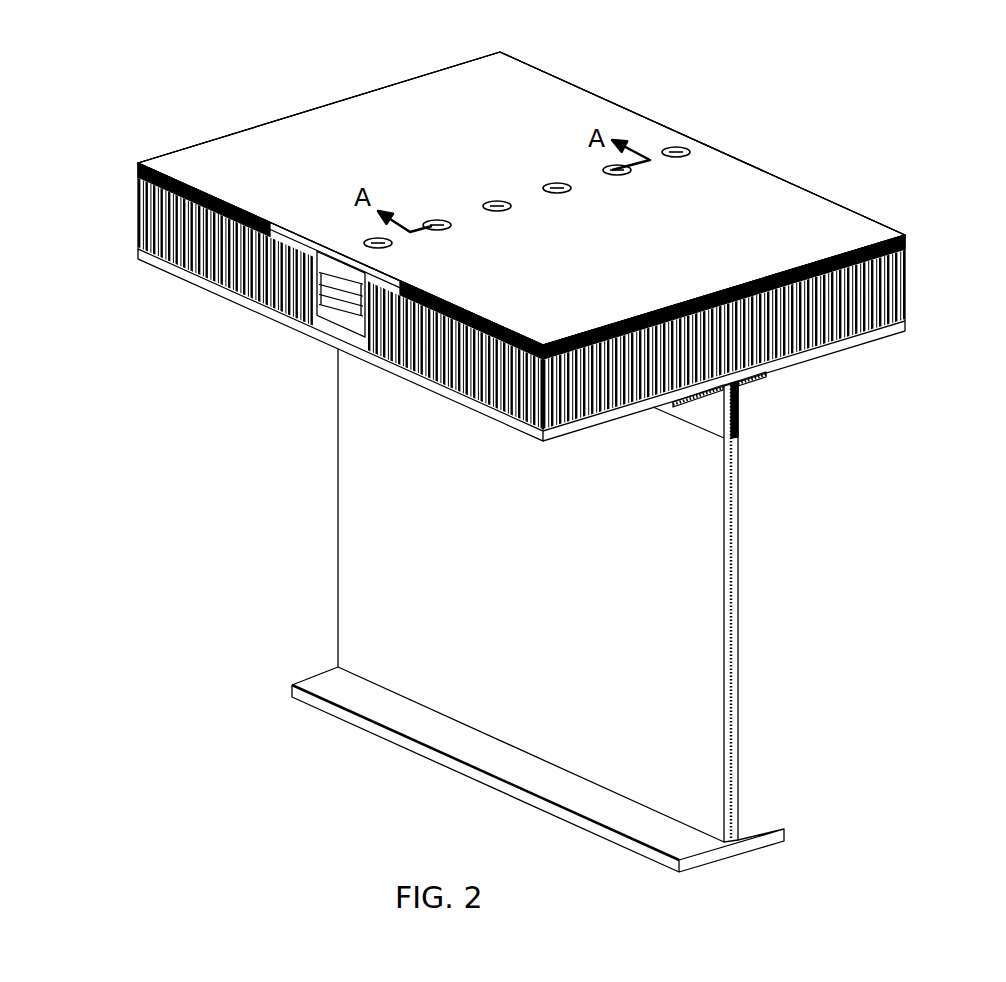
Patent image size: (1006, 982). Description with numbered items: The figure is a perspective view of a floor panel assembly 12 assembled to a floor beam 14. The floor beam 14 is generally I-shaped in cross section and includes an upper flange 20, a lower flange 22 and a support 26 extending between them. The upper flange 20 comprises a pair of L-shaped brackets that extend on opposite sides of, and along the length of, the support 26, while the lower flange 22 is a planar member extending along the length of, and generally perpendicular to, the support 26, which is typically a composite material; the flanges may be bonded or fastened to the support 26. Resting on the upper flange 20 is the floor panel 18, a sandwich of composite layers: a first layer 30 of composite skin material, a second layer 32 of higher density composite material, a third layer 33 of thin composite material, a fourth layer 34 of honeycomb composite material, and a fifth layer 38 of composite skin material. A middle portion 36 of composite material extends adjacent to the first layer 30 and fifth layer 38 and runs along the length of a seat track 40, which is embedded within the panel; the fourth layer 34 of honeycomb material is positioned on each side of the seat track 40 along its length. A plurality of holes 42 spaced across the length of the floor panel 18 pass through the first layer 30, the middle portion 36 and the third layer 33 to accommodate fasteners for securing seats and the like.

The floor panel assembly 12 is at (820, 196).
The floor beam 14 is at (750, 688).
The floor panel 18 is at (539, 104).
The upper flange 20 is at (708, 408).
The lower flange 22 is at (770, 817).
The support 26 is at (740, 553).
The first layer 30 is at (237, 163).
The second layer 32 is at (137, 166).
The third layer 33 is at (907, 240).
The fourth layer 34 is at (137, 212).
The middle portion 36 is at (300, 248).
The fifth layer 38 is at (162, 268).
The seat track 40 is at (328, 325).
The holes 42 is at (677, 150).